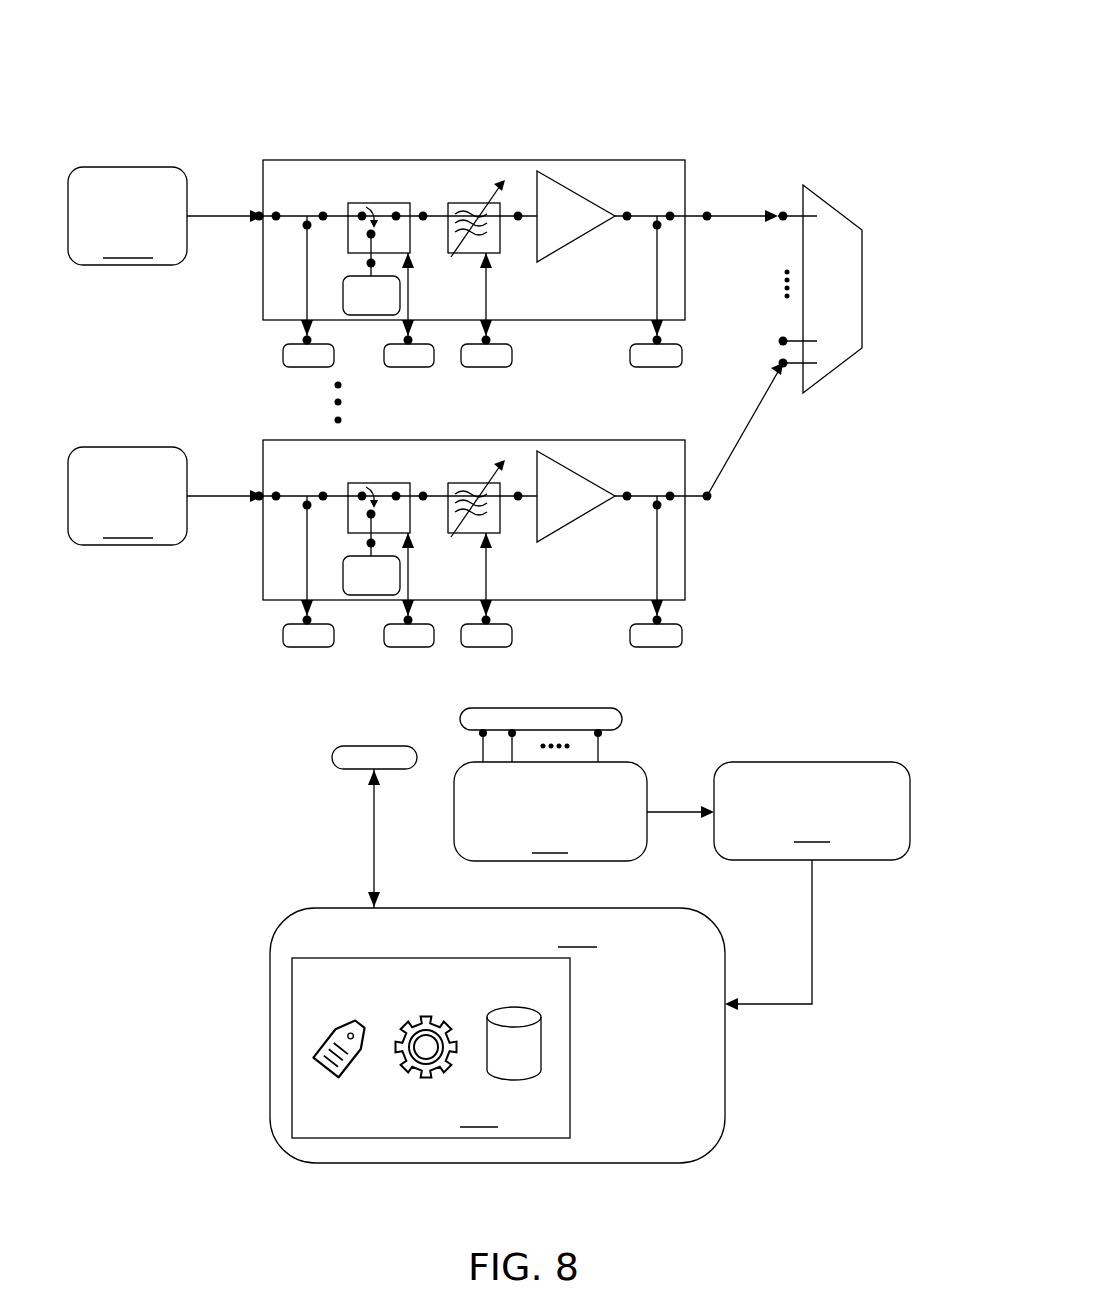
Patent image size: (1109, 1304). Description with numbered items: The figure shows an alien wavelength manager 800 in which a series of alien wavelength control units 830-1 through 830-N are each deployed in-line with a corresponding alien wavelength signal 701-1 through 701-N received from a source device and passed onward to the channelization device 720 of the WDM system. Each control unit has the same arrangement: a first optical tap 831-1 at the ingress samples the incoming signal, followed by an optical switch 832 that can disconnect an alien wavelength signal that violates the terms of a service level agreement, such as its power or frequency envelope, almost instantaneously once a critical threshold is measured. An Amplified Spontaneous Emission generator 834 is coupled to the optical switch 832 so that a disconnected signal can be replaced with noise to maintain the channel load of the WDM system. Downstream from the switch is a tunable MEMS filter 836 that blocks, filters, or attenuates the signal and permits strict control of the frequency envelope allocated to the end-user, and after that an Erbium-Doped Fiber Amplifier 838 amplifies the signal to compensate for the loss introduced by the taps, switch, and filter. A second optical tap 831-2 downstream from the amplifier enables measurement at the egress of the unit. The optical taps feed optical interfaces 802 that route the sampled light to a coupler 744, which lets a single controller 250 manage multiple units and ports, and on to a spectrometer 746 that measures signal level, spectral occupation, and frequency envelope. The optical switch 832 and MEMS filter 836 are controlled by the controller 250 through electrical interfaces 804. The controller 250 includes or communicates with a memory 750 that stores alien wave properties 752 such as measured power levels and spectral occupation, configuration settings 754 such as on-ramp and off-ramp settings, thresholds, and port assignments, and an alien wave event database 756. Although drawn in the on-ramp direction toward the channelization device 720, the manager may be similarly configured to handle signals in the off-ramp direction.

The alien wavelength manager 800 is at (711, 57).
The alien wavelength signal 701-1 is at (165, 216).
The alien wavelength signal 701-N is at (165, 496).
The alien wavelength control unit 830-1 is at (274, 148).
The alien wavelength control unit 830-N is at (258, 440).
The first optical tap 831-1 is at (302, 193).
The second optical tap 831-2 is at (652, 192).
The optical switch 832 is at (389, 187).
The Amplified Spontaneous Emission generator 834 is at (392, 316).
The MEMS filter 836 is at (474, 187).
The Erbium-Doped Fiber Amplifier 838 is at (589, 183).
The optical interface 802 is at (306, 369).
The electrical interface 804 is at (353, 745).
The channelization device 720 is at (878, 256).
The coupler 744 is at (584, 795).
The spectrometer 746 is at (812, 886).
The controller 250 is at (497, 1035).
The memory 750 is at (464, 1048).
The alien wave properties 752 is at (343, 1012).
The configuration settings 754 is at (427, 1015).
The alien wave event database 756 is at (541, 1043).